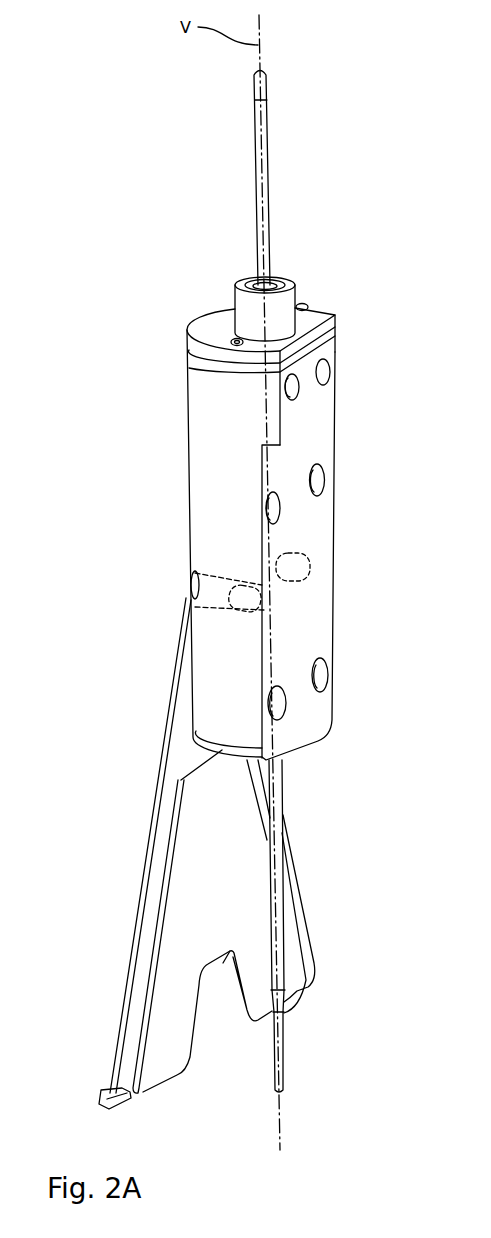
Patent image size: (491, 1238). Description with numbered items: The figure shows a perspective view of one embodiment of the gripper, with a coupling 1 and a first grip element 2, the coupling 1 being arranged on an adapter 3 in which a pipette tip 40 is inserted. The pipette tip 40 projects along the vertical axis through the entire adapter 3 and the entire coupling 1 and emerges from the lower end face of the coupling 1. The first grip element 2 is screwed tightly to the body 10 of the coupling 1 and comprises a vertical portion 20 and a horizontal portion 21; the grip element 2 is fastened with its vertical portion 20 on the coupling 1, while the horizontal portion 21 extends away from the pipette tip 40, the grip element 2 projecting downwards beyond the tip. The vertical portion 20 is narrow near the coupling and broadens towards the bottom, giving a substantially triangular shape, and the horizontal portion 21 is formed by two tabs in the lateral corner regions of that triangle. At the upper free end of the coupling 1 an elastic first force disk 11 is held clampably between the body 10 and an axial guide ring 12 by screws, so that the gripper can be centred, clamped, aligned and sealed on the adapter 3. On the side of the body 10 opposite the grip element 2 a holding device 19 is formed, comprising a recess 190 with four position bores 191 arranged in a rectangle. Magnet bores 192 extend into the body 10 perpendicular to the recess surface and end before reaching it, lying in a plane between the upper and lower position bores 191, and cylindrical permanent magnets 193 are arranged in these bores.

The coupling 1 is at (142, 427).
The first grip element 2 is at (90, 824).
The adapter 3 is at (238, 303).
The body 10 is at (212, 520).
The first force disk 11 is at (192, 363).
The axial guide ring 12 is at (210, 320).
The holding device 19 is at (408, 564).
The vertical portion 20 is at (148, 930).
The horizontal portion 21 is at (103, 1095).
The pipette tip 40 is at (262, 163).
The recess 190 is at (318, 432).
The position bores 191 is at (324, 480).
The magnet bores 192 is at (190, 588).
The cylindrical permanent magnets 193 is at (268, 611).